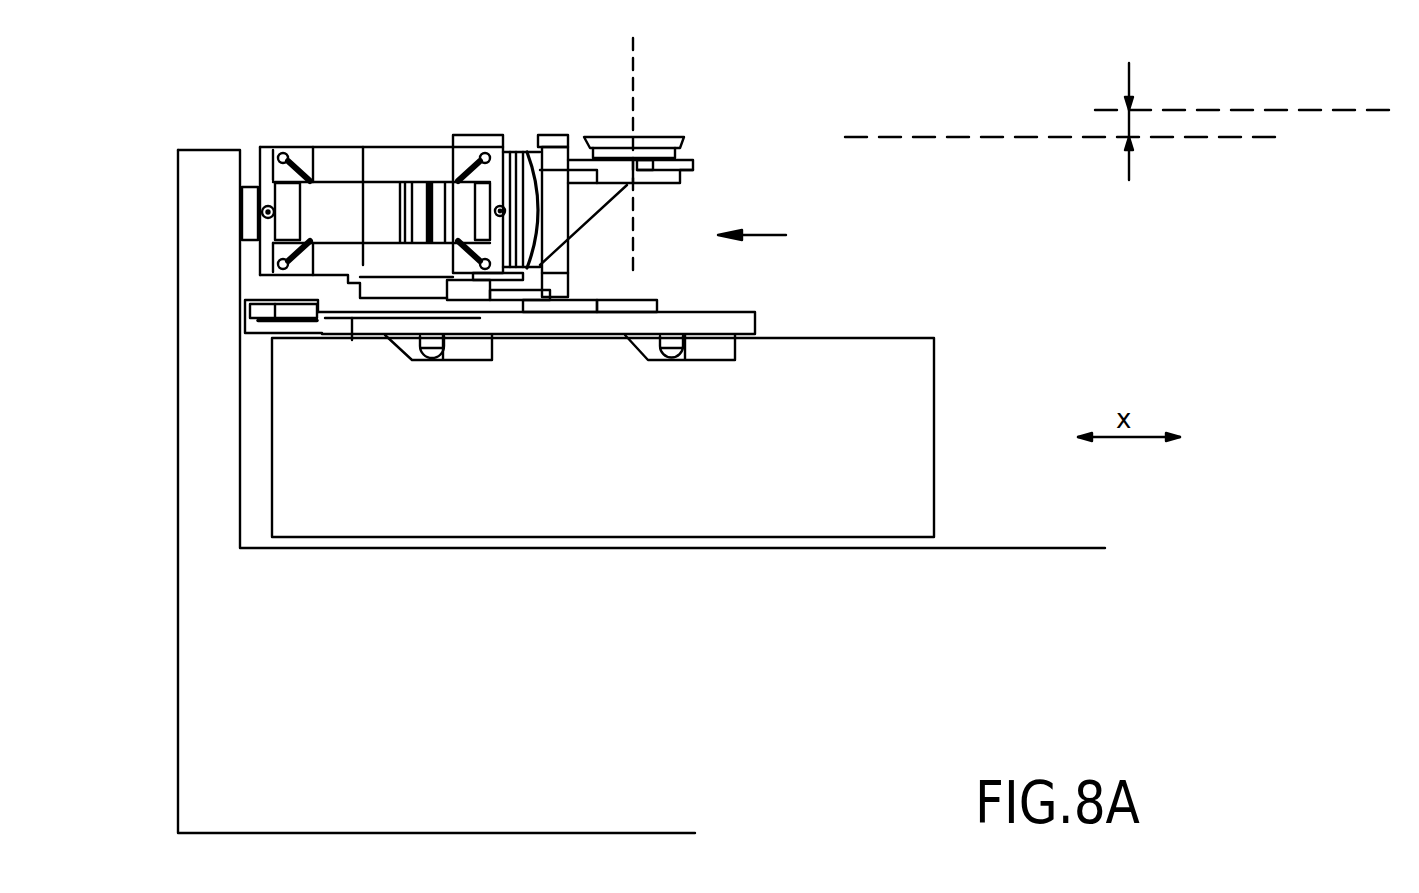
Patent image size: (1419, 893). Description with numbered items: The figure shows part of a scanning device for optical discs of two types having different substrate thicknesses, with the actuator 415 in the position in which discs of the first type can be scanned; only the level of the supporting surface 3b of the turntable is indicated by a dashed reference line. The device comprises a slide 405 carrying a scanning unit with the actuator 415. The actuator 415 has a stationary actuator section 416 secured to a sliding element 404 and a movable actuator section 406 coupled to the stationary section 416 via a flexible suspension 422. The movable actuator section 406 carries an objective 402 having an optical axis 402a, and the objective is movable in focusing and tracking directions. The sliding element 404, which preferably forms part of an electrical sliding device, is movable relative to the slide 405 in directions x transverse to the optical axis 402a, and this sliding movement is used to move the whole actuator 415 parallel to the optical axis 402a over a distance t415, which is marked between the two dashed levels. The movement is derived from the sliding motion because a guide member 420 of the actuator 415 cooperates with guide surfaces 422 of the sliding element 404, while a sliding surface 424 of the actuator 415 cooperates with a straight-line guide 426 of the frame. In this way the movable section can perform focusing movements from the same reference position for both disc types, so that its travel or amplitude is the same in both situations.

The optical axis 402a is at (628, 53).
The objective 402 is at (657, 143).
The movable actuator section 406 is at (603, 192).
The actuator 415 is at (777, 239).
The guide member 420 is at (718, 325).
The guide surfaces 422 is at (348, 163).
The sliding surface 424 is at (240, 252).
The stationary actuator section 416 is at (258, 287).
The straight-line guide 426 is at (242, 157).
The sliding element 404 is at (900, 470).
The slide 405 is at (215, 740).
The supporting surface 3b is at (1277, 106).
The distance t415 is at (1130, 120).